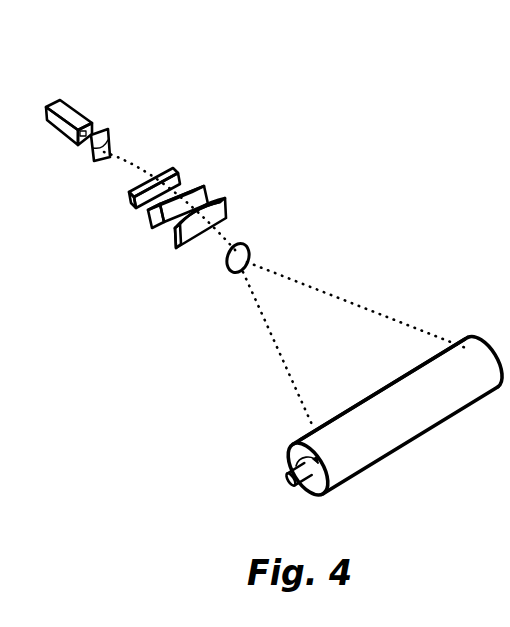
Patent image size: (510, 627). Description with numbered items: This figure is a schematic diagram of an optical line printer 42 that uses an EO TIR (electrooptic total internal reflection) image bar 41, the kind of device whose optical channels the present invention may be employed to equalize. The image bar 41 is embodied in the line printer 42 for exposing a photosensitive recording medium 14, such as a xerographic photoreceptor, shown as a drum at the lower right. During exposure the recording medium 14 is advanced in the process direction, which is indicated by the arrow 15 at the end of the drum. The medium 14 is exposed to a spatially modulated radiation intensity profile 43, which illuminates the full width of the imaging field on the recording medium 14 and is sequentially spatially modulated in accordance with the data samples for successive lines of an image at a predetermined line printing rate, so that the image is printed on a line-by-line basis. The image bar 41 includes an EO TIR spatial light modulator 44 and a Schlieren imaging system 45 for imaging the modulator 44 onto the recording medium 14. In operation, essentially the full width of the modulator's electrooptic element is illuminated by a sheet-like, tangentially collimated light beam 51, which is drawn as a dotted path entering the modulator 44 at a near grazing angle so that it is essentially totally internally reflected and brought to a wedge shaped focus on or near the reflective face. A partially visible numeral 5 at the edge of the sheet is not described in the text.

The cropped numeral at sheet edge 5 is at (506, 41).
The photosensitive recording medium 14 is at (423, 405).
The arrow 15 is at (302, 445).
The EO TIR image bar 41 is at (137, 242).
The line printer 42 is at (177, 62).
The spatially modulated radiation intensity profile 43 is at (385, 388).
The EO TIR spatial light modulator 44 is at (195, 186).
The Schlieren imaging system 45 is at (228, 283).
The light beam 51 is at (130, 170).